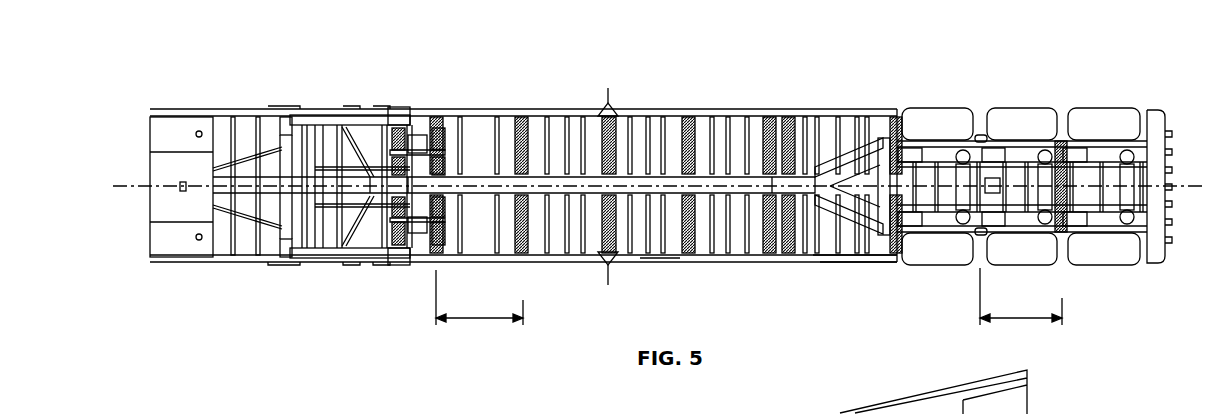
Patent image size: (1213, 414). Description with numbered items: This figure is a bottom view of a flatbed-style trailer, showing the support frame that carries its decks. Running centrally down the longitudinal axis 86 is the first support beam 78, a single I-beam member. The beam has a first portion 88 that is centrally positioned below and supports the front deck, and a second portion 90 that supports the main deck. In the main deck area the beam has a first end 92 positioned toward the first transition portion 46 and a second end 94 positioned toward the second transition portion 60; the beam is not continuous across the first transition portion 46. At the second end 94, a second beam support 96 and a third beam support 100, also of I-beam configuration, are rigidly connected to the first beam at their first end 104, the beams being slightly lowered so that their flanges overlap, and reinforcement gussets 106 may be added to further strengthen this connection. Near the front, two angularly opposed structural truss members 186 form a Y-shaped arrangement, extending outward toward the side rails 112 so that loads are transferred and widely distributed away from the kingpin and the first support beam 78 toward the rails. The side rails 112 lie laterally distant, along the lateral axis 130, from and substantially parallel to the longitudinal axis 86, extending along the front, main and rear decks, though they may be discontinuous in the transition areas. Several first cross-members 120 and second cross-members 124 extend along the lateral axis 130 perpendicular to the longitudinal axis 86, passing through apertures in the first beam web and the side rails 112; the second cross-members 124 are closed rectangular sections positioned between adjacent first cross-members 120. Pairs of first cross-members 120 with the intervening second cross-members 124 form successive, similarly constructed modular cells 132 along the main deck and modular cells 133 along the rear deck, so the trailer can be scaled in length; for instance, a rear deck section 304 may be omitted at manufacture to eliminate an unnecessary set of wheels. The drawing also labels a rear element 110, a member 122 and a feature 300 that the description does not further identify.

The first transition portion 46 is at (370, 97).
The second transition portion 60 is at (828, 272).
The first support beam 78 is at (468, 166).
The longitudinal axis 86 is at (122, 190).
The first portion 88 is at (220, 193).
The second portion 90 is at (798, 262).
The first end 92 is at (438, 197).
The second end 94 is at (843, 262).
The second beam support 96 is at (943, 222).
The third beam support 100 is at (943, 153).
The first end 104 is at (882, 213).
The reinforcement gussets 106 is at (885, 148).
The rear bumper 110 is at (1140, 225).
The side rails 112 is at (655, 110).
The first cross-members 120 is at (529, 147).
The support bar 122 is at (238, 142).
The second cross-members 124 is at (568, 148).
The lateral axis 130 is at (608, 277).
The modular cells 132 is at (480, 325).
The modular cells 133 is at (1020, 318).
The structural truss members 186 is at (268, 150).
The bottom rail portion 300 is at (660, 272).
The rear deck section 304 is at (1110, 97).